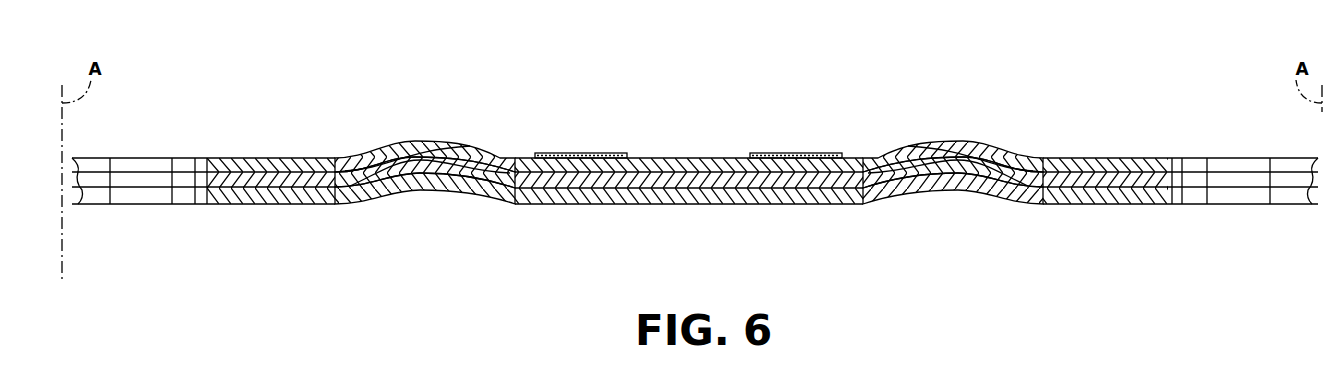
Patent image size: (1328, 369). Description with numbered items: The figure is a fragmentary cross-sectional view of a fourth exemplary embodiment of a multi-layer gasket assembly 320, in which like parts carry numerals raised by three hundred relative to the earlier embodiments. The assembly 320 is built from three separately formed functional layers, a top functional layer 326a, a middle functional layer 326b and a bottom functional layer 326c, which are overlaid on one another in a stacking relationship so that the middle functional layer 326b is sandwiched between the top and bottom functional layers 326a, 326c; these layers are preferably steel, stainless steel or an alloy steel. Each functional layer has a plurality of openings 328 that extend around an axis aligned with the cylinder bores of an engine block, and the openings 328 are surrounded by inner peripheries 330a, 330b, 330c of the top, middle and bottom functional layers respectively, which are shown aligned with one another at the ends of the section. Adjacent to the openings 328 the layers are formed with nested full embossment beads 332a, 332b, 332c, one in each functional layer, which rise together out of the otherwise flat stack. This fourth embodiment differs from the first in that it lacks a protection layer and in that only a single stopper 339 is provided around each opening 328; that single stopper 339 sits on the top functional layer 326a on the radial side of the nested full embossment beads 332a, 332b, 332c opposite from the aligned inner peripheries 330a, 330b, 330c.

The multi-layer gasket assembly 320 is at (882, 98).
The top functional layer 326a is at (663, 163).
The middle functional layer 326b is at (675, 178).
The bottom functional layer 326c is at (640, 196).
The opening 328 is at (137, 182).
The inner periphery of the top functional layer 330a is at (206, 164).
The inner periphery of the middle functional layer 330b is at (206, 178).
The inner periphery of the bottom functional layer 330c is at (205, 197).
The full embossment bead of the top functional layer 332a is at (400, 157).
The full embossment bead of the middle functional layer 332b is at (410, 166).
The full embossment bead of the bottom functional layer 332c is at (442, 178).
The stopper 339 is at (580, 152).